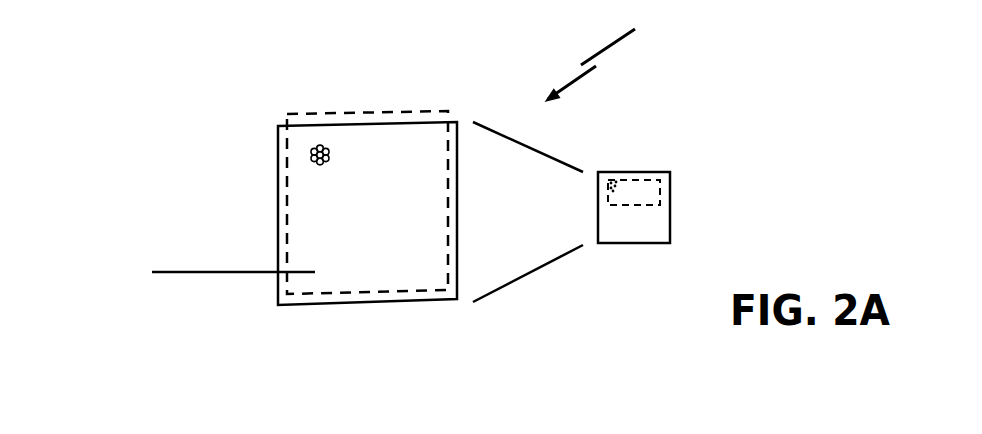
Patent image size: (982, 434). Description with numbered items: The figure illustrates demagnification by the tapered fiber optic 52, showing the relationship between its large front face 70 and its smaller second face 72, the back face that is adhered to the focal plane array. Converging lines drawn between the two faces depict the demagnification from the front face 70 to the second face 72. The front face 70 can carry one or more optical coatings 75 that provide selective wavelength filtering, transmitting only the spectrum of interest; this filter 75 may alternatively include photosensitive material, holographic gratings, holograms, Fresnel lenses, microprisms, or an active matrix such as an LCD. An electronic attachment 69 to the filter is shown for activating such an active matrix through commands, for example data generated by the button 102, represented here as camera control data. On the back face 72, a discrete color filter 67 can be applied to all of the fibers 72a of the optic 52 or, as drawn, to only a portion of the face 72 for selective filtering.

The fiber optic 52 is at (597, 53).
The electronic attachment 69 is at (242, 270).
The front face 70 is at (370, 280).
The second face 72 is at (627, 227).
The fibers 72a is at (328, 161).
The optical coating 75 is at (450, 203).
The discrete color filter 67 is at (670, 203).
The button 102 is at (85, 271).